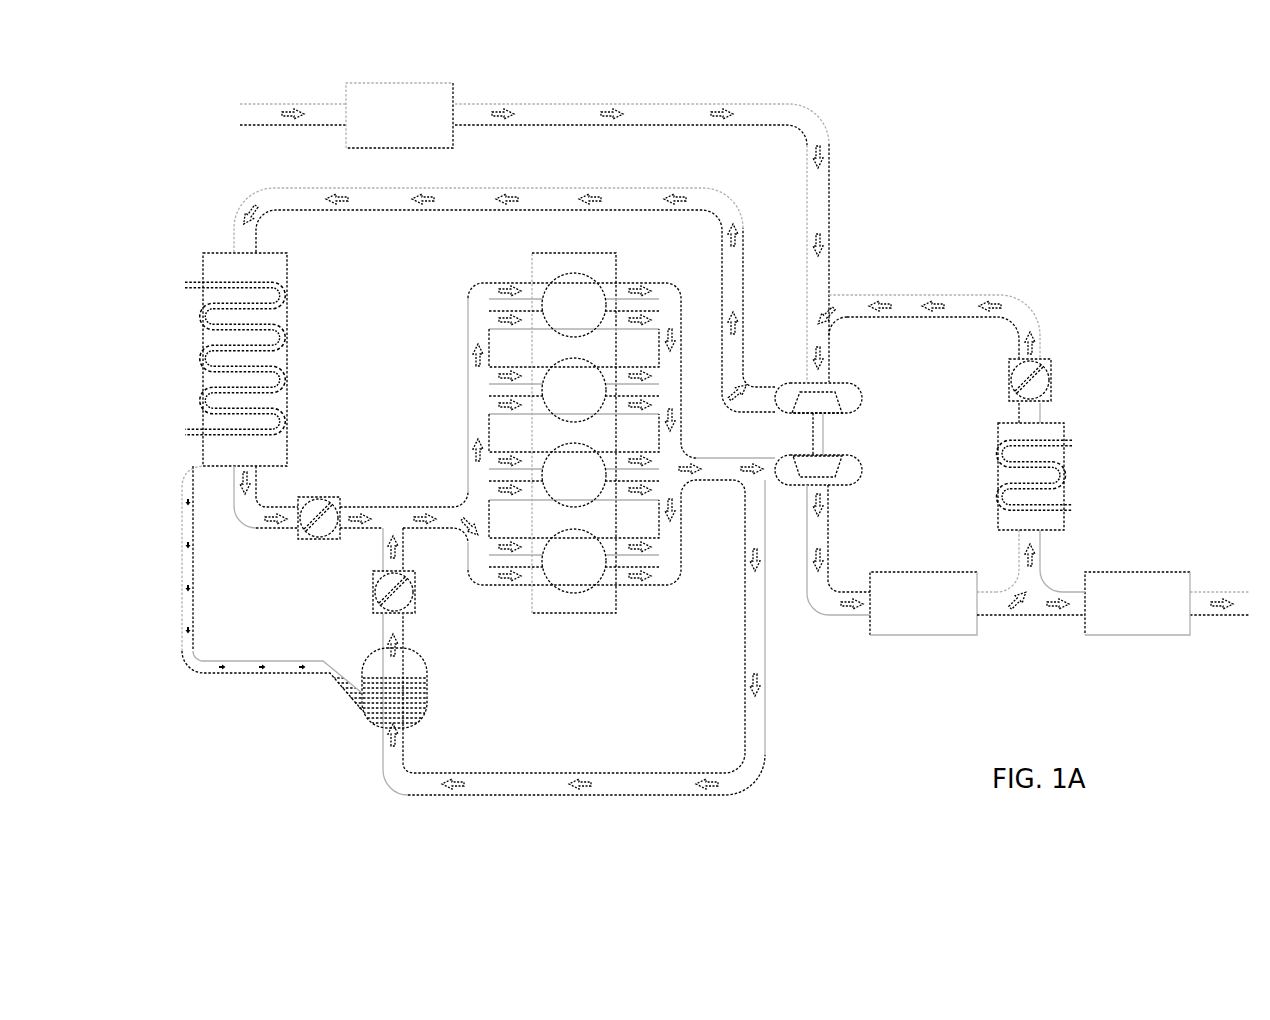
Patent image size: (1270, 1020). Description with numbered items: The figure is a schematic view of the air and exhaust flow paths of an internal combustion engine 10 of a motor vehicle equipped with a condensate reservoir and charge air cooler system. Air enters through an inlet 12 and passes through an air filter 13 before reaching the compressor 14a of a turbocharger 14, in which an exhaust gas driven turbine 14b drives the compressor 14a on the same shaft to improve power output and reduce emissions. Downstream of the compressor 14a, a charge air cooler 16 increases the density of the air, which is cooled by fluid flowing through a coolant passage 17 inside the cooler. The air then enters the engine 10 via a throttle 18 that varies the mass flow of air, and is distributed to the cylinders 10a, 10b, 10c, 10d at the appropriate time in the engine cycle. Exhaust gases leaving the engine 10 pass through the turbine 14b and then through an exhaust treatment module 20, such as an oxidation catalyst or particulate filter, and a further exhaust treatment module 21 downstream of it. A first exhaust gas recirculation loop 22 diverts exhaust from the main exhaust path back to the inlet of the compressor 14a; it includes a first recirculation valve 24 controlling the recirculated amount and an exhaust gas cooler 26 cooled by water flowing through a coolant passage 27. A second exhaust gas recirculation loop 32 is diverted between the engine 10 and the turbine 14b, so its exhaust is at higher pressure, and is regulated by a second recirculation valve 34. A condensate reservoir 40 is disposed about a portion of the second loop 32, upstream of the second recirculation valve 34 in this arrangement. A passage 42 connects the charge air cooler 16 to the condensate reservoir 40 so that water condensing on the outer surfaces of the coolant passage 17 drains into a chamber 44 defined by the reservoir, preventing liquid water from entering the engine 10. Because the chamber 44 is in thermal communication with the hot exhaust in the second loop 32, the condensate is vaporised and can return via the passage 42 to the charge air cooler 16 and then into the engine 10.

The internal combustion engine 10 is at (574, 470).
The cylinder 10a is at (574, 561).
The cylinder 10b is at (574, 475).
The cylinder 10c is at (574, 390).
The cylinder 10d is at (574, 305).
The inlet 12 is at (240, 112).
The air filter 13 is at (360, 138).
The turbocharger 14 is at (870, 431).
The compressor 14a is at (836, 388).
The turbine 14b is at (844, 471).
The charge air cooler 16 is at (252, 344).
The coolant passage 17 is at (233, 284).
The throttle 18 is at (312, 502).
The exhaust treatment module 20 is at (917, 617).
The further exhaust treatment module 21 is at (1135, 617).
The first exhaust gas recirculation loop 22 is at (920, 300).
The first recirculation valve 24 is at (1040, 386).
The exhaust gas cooler 26 is at (1067, 470).
The coolant passage 27 is at (1045, 506).
The second exhaust gas recirculation loop 32 is at (497, 776).
The second recirculation valve 34 is at (373, 601).
The condensate reservoir 40 is at (389, 704).
The passage 42 is at (207, 672).
The chamber 44 is at (418, 702).